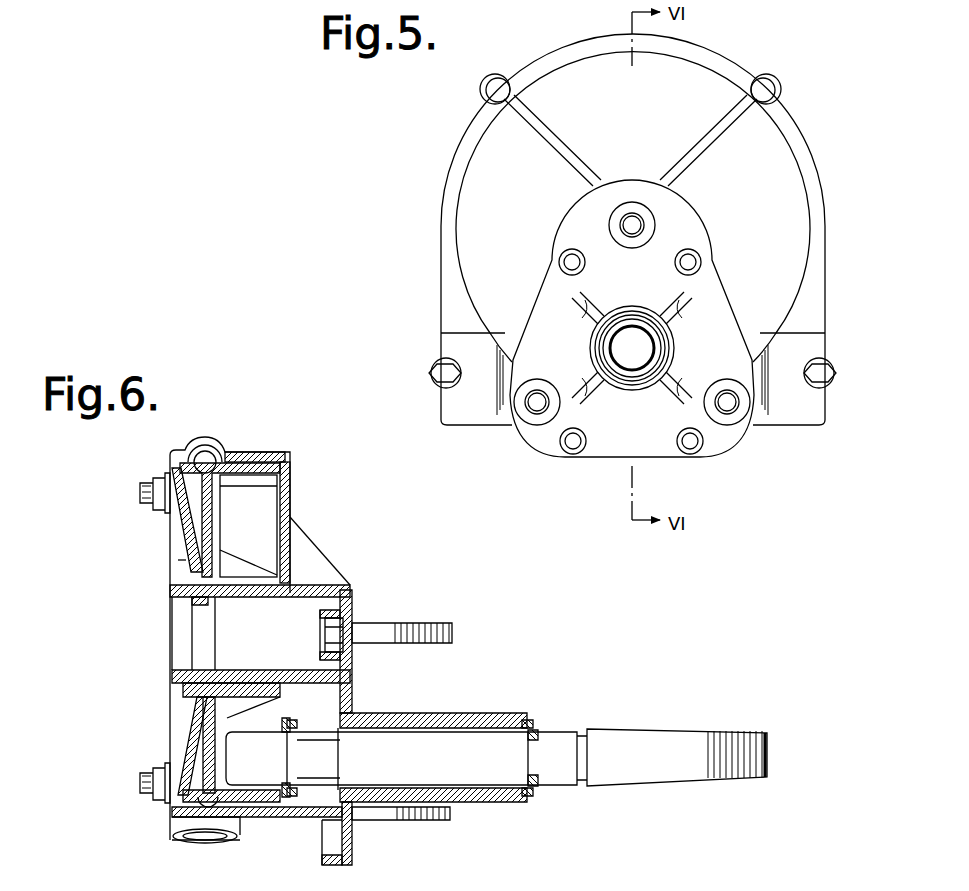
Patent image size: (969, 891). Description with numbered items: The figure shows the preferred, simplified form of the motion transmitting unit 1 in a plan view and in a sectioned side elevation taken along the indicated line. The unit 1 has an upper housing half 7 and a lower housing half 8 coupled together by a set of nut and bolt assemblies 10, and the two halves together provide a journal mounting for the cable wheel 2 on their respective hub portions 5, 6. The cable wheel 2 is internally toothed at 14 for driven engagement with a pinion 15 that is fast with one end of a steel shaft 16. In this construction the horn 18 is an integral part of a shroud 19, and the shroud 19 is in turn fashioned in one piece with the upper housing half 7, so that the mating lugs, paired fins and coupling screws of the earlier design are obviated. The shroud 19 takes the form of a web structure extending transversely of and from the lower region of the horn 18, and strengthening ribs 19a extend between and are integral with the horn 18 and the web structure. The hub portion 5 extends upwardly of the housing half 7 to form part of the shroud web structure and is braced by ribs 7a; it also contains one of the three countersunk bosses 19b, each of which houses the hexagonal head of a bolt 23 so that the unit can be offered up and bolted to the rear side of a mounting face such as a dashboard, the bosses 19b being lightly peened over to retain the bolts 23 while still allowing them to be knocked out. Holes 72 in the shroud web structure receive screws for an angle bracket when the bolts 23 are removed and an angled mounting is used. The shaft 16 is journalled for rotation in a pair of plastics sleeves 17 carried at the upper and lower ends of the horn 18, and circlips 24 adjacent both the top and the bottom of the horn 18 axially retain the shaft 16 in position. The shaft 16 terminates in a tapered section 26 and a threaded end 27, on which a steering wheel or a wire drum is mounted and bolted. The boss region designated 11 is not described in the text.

In FIG. 5, the motion transmitting unit 1 is at (820, 182).
In FIG. 6, the motion transmitting unit 1 is at (265, 446).
In FIG. 6, the cable wheel 2 is at (238, 590).
In FIG. 6, the hub portion 5 is at (280, 590).
In FIG. 6, the hub portion 6 is at (182, 598).
In FIG. 6, the upper housing half 7 is at (290, 502).
In FIG. 5, the ribs 7a is at (687, 162).
In FIG. 6, the ribs 7a is at (318, 574).
In FIG. 6, the lower housing half 8 is at (182, 540).
In FIG. 5, the nut and bolt assemblies 10 is at (490, 90).
In FIG. 6, the nut and bolt assemblies 10 is at (155, 497).
In FIG. 6, the boss 11 is at (205, 820).
In FIG. 6, the internal teeth 14 is at (265, 482).
In FIG. 6, the pinion 15 is at (240, 735).
In FIG. 5, the shaft 16 is at (623, 352).
In FIG. 6, the shaft 16 is at (420, 763).
In FIG. 6, the plastics sleeves 17 is at (348, 720).
In FIG. 6, the horn 18 is at (418, 718).
In FIG. 5, the shroud 19 is at (718, 308).
In FIG. 6, the shroud 19 is at (357, 850).
In FIG. 5, the strengthening ribs 19a is at (650, 302).
In FIG. 5, the countersunk bosses 19b is at (650, 222).
In FIG. 6, the countersunk bosses 19b is at (352, 612).
In FIG. 5, the bolts 23 is at (630, 226).
In FIG. 6, the bolts 23 is at (432, 644).
In FIG. 6, the circlips 24 is at (292, 722).
In FIG. 6, the tapered section 26 is at (625, 742).
In FIG. 6, the threaded end 27 is at (748, 735).
In FIG. 5, the holes 72 is at (570, 262).